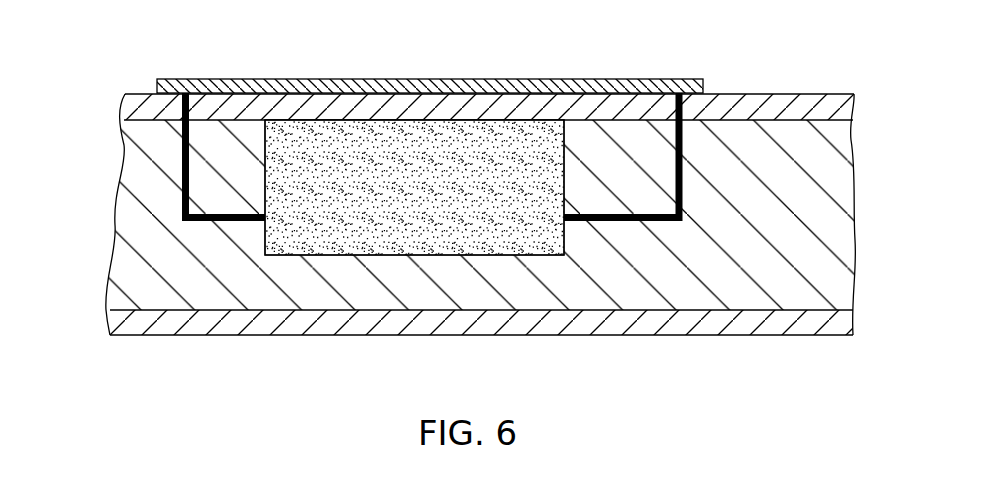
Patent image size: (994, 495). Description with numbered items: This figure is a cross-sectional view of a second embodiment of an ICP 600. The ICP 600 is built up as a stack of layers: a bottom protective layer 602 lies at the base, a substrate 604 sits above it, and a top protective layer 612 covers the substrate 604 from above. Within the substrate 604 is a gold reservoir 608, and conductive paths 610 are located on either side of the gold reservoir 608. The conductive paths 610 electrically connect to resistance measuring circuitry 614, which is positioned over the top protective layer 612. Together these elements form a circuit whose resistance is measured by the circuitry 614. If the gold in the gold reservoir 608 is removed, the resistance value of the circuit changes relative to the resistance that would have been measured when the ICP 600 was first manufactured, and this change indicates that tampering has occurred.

The ICP 600 is at (857, 39).
The bottom protective layer 602 is at (730, 335).
The substrate 604 is at (128, 280).
The gold reservoir 608 is at (407, 255).
The conductive paths 610 is at (182, 148).
The top protective layer 612 is at (845, 105).
The resistance measuring circuitry 614 is at (592, 79).